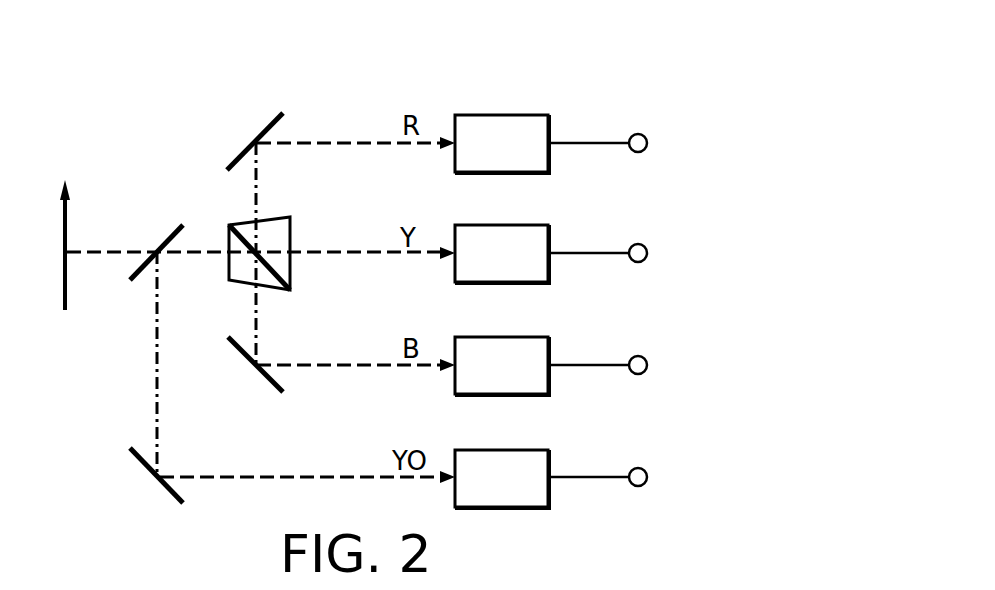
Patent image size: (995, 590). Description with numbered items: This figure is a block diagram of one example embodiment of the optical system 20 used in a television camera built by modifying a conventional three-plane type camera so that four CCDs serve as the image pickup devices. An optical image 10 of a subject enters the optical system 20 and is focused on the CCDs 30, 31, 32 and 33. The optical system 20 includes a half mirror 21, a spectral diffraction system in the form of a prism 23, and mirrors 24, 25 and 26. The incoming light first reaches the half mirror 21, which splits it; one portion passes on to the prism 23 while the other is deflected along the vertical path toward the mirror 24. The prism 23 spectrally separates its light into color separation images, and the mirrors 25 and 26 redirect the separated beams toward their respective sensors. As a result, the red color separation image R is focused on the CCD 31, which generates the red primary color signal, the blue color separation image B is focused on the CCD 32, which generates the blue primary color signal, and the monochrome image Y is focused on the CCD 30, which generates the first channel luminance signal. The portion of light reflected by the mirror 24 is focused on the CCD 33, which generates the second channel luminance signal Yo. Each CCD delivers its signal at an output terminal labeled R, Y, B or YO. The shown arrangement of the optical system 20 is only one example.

The optical system 20 is at (199, 105).
The optical image 10 is at (68, 282).
The half mirror 21 is at (167, 240).
The spectral diffraction system (prism) 23 is at (292, 233).
The mirror 24 is at (143, 458).
The mirror 25 is at (263, 377).
The mirror 26 is at (260, 127).
The CCD 30 is at (475, 225).
The CCD 31 is at (475, 115).
The CCD 32 is at (475, 337).
The CCD 33 is at (475, 450).